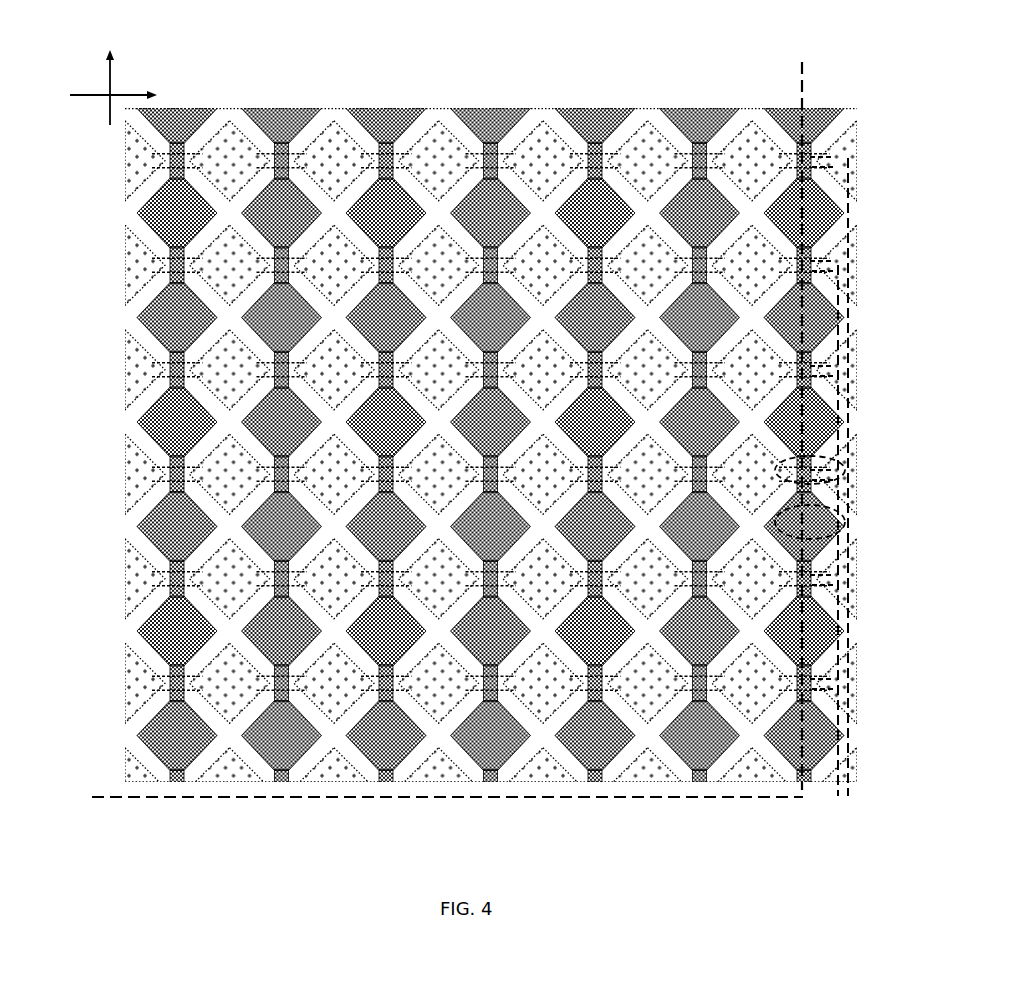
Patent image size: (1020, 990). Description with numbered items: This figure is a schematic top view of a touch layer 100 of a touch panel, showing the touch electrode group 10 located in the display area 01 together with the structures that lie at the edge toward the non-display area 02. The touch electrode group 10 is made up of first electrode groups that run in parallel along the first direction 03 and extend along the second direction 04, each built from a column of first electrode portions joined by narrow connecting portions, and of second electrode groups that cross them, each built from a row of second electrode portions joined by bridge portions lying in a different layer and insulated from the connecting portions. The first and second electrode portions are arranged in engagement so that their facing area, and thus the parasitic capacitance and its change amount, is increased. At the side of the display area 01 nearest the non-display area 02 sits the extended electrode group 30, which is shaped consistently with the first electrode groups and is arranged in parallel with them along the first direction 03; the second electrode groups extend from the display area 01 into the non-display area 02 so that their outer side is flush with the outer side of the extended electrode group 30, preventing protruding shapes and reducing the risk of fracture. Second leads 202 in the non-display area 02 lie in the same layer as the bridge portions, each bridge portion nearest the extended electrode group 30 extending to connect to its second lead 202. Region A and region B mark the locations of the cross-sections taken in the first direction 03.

The touch layer 100 is at (206, 52).
The touch electrode group 10 is at (395, 46).
The second lead 202 is at (842, 162).
The extended electrode group 30 is at (802, 788).
The region A is at (840, 464).
The region B is at (840, 512).
The display area 01 is at (599, 86).
The non-display area 02 is at (829, 86).
The first direction 03 is at (100, 97).
The second direction 04 is at (108, 96).